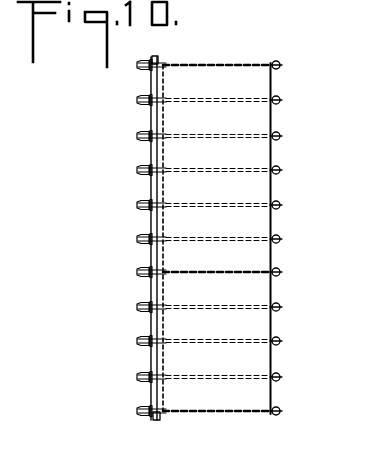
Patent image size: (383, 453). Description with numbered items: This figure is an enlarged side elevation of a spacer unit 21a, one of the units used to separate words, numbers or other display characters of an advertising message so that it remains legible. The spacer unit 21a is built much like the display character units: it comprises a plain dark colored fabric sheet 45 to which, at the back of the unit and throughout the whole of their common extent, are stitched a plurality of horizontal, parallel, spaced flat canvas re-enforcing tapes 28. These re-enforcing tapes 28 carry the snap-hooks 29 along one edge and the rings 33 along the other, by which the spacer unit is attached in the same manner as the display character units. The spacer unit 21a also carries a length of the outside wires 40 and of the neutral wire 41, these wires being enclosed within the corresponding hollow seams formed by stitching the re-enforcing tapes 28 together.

The spacer unit 21a is at (288, 223).
The outside wires 40 is at (281, 65).
The plain dark colored fabric sheet 45 is at (250, 152).
The rings 33 is at (277, 205).
The neutral wire 41 is at (280, 272).
The re-enforcing tapes 28 is at (155, 173).
The snap-hooks 29 is at (138, 238).